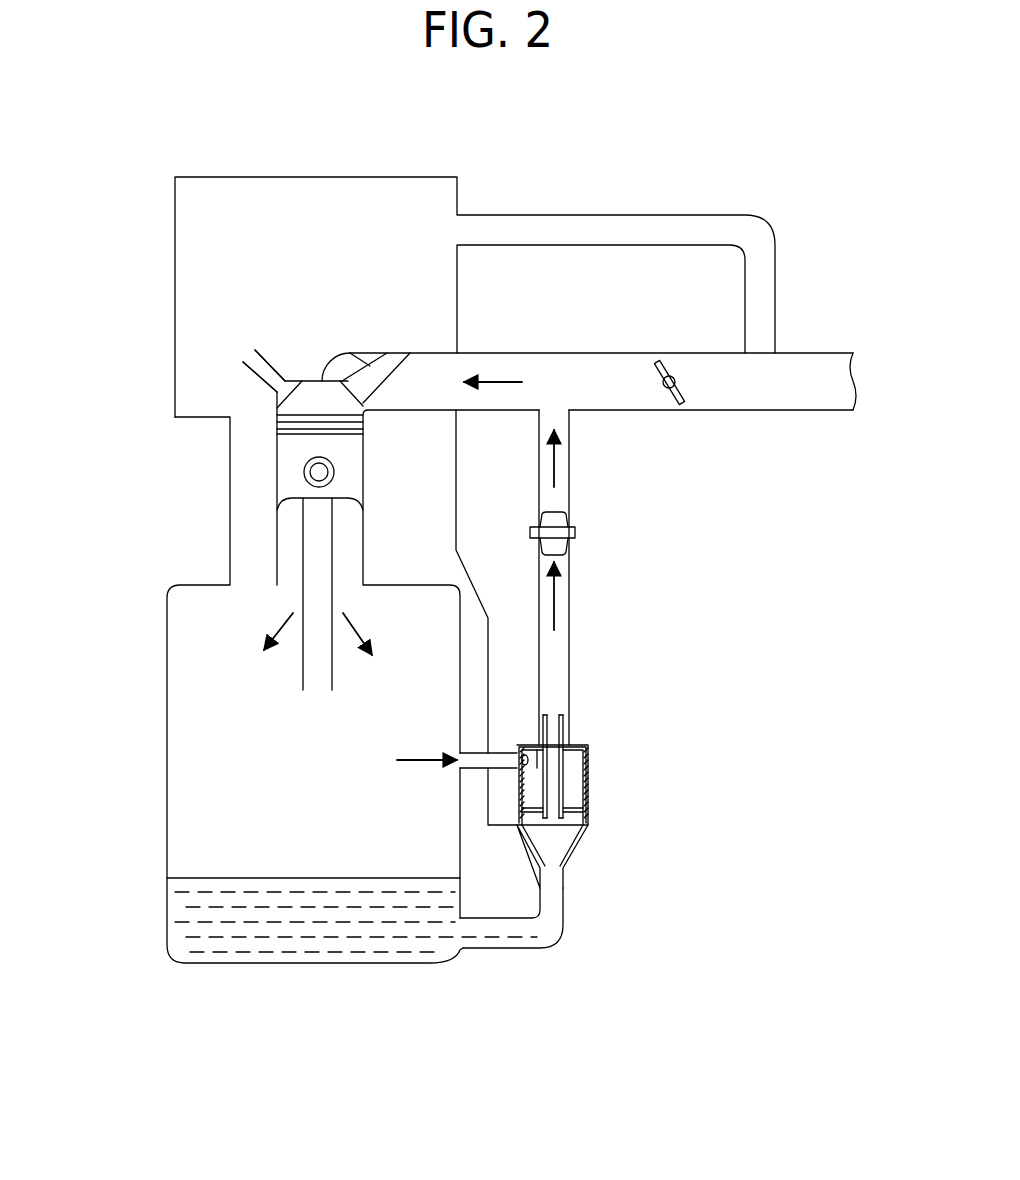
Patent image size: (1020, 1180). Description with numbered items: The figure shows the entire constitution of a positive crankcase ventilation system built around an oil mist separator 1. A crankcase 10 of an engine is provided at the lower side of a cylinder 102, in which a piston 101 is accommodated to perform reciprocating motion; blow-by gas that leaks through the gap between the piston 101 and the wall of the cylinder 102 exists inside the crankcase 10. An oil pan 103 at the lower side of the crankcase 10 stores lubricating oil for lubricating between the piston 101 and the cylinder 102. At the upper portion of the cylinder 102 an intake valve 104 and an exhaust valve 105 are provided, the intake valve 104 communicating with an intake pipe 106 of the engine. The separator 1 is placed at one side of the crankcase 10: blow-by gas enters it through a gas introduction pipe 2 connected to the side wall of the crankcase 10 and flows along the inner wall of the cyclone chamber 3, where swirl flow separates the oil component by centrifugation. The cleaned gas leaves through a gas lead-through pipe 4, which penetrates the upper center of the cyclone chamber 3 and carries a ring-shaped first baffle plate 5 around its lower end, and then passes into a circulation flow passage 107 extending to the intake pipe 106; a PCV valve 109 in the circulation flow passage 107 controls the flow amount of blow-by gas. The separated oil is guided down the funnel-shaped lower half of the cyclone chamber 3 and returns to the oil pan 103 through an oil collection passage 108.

The crankcase 10 is at (167, 713).
The piston 101 is at (285, 453).
The cylinder 102 is at (290, 527).
The oil pan 103 is at (197, 943).
The intake valve 104 is at (350, 352).
The exhaust valve 105 is at (267, 375).
The intake pipe 106 is at (603, 385).
The circulation flow passage 107 is at (567, 583).
The oil collection passage 108 is at (512, 937).
The PCV valve 109 is at (562, 533).
The oil mist separator 1 is at (573, 760).
The gas introduction pipe 2 is at (500, 745).
The cyclone chamber 3 is at (588, 758).
The gas lead-through pipe 4 is at (588, 790).
The first baffle plate 5 is at (573, 807).